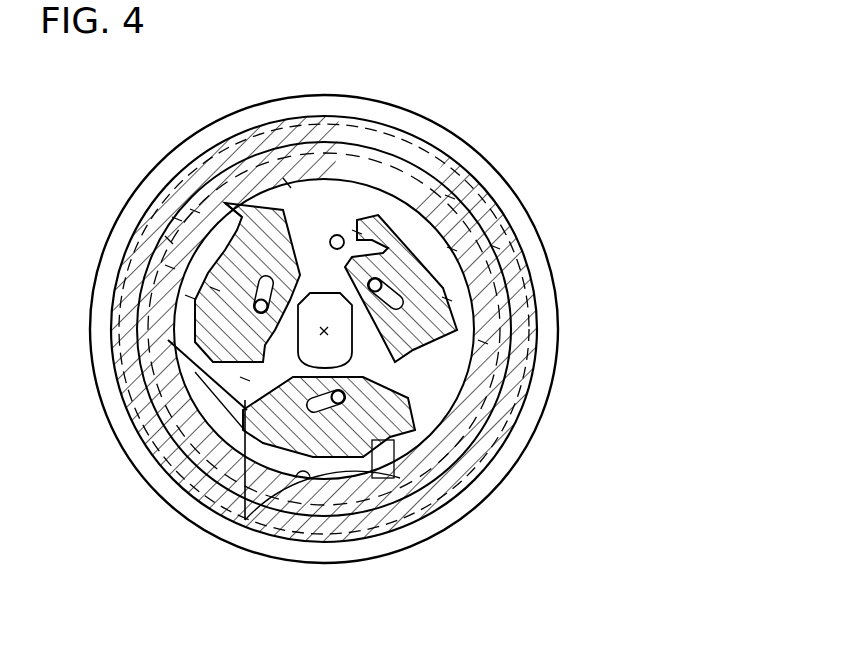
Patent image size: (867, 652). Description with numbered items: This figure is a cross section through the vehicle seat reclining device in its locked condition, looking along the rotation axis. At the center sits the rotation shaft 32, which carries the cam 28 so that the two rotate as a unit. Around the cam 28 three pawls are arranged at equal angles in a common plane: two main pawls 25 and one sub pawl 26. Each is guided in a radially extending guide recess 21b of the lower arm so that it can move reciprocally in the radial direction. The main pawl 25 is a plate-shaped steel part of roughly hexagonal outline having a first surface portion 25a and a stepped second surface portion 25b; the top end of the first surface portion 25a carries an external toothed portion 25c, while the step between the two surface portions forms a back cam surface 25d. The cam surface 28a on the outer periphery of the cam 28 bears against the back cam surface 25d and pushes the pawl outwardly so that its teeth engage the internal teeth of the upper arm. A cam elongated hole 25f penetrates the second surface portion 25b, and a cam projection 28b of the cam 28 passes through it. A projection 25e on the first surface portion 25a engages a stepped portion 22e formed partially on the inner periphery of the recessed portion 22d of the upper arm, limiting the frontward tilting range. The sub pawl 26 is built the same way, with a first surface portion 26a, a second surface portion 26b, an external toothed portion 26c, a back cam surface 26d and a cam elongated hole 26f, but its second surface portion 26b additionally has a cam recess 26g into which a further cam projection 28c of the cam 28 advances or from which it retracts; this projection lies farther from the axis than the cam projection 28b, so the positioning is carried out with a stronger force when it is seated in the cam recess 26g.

The guide recess 21b is at (205, 178).
The recessed portion 22d is at (170, 240).
The stepped portion 22e is at (290, 185).
The main pawl 25 is at (268, 192).
The first surface portion 25a is at (170, 268).
The second surface portion 25b is at (245, 380).
The external toothed portion 25c is at (177, 220).
The back cam surface 25d is at (190, 298).
The projection 25e is at (195, 212).
The cam elongated hole 25f is at (215, 290).
The sub pawl 26 is at (472, 206).
The first surface portion 26a is at (452, 250).
The second surface portion 26b is at (483, 343).
The external toothed portion 26c is at (495, 248).
The back cam surface 26d is at (450, 197).
The cam elongated hole 26f is at (447, 300).
The cam recess 26g is at (357, 232).
The cam 28 is at (293, 377).
The cam surface 28a is at (225, 245).
The cam projection 28b is at (256, 300).
The cam projection 28c is at (337, 234).
The rotation shaft 32 is at (298, 355).